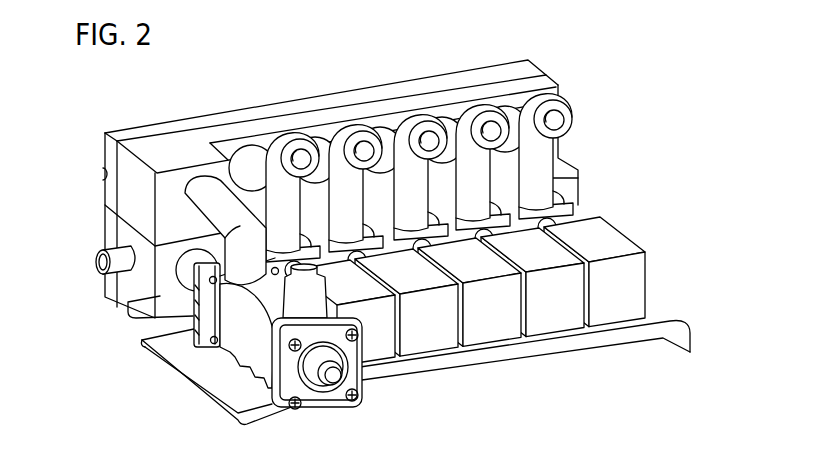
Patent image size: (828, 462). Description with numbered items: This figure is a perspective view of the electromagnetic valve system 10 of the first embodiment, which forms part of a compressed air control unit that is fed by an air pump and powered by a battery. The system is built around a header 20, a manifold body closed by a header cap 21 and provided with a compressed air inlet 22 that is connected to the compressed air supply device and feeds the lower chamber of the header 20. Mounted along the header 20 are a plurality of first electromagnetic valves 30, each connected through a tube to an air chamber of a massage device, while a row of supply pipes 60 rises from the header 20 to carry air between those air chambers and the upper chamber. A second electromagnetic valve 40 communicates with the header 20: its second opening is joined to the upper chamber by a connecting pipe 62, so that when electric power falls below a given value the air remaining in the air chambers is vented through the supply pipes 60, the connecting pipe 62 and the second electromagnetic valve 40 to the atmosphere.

The electromagnetic valve system 10 is at (594, 139).
The header 20 is at (213, 132).
The header cap 21 is at (290, 103).
The compressed air inlet 22 is at (113, 258).
The first electromagnetic valves 30 is at (618, 304).
The second electromagnetic valve 40 is at (235, 312).
The supply pipes 60 is at (533, 97).
The connecting pipe 62 is at (213, 205).